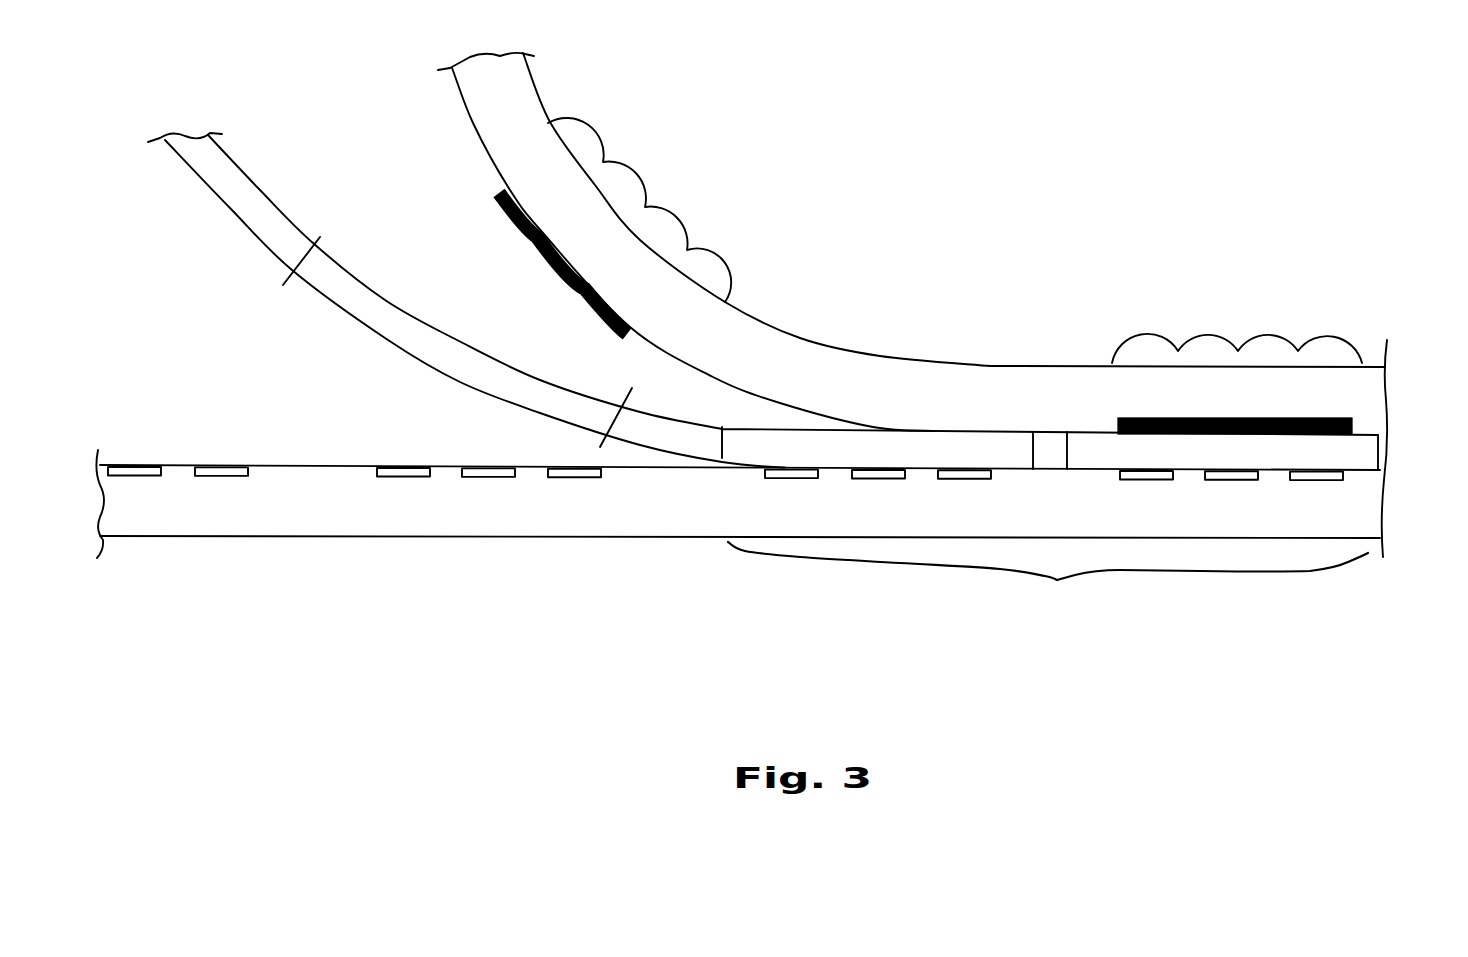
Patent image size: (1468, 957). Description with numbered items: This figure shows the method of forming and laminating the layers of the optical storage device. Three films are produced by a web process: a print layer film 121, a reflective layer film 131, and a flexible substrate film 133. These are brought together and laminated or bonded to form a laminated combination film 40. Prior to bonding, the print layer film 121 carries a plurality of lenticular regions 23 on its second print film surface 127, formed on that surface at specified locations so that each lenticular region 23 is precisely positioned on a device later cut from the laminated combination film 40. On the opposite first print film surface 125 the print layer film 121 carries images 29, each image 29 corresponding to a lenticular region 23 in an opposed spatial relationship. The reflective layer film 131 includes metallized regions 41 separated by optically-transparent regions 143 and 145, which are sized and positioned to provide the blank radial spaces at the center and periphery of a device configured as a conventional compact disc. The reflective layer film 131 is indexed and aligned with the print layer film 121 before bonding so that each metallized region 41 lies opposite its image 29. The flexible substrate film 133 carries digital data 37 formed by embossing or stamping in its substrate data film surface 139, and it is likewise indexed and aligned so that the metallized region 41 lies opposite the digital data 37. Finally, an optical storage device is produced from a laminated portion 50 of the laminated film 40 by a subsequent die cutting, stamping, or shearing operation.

The lenticular regions 23 is at (678, 218).
The images 29 is at (538, 267).
The digital data 37 is at (575, 479).
The laminated combination film 40 is at (741, 479).
The metallized regions 41 is at (348, 285).
The laminated portion 50 is at (1048, 583).
The print layer film 121 is at (523, 90).
The first print film surface 125 is at (473, 123).
The second print film surface 127 is at (872, 355).
The reflective layer film 131 is at (243, 187).
The flexible substrate film 133 is at (300, 483).
The substrate data film surface 139 is at (341, 462).
The optically-transparent region 143 is at (1050, 473).
The optically-transparent region 145 is at (638, 417).